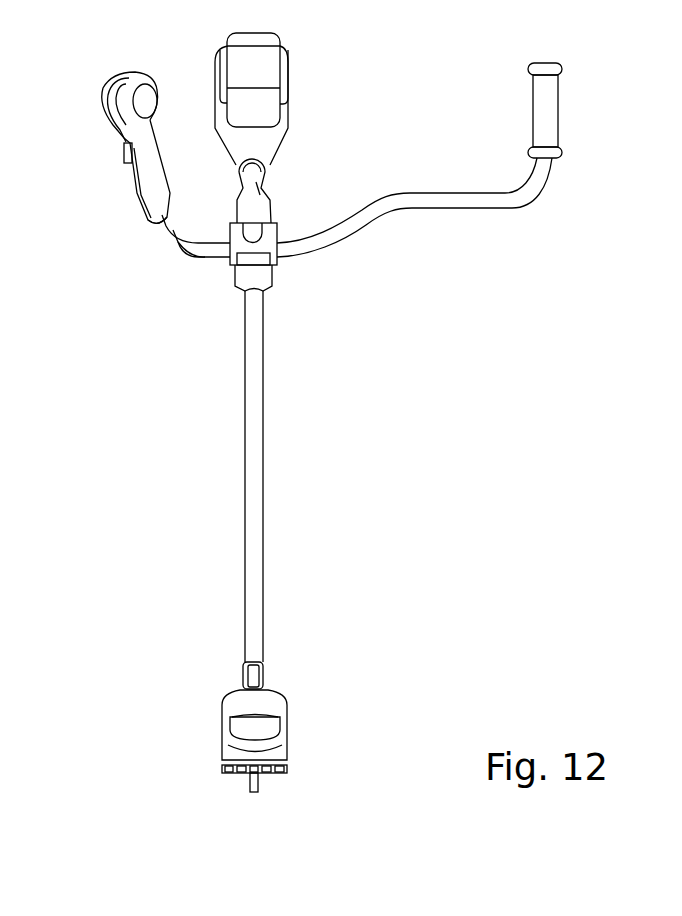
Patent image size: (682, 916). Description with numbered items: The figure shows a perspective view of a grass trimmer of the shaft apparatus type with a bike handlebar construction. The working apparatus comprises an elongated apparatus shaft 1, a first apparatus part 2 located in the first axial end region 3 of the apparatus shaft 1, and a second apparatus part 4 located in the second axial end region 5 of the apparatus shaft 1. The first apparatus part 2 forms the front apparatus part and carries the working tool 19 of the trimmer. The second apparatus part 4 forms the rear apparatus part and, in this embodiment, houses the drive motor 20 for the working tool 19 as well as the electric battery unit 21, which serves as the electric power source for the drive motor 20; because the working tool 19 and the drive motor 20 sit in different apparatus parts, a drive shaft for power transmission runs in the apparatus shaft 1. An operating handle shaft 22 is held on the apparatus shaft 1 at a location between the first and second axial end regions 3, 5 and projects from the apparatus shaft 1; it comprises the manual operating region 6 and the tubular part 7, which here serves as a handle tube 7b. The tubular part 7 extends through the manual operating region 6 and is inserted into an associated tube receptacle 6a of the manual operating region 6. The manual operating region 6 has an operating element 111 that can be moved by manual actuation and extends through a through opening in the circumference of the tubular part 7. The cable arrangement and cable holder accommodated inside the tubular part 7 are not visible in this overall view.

The apparatus shaft 1 is at (253, 423).
The first apparatus part 2 is at (285, 727).
The first axial end region 3 is at (265, 673).
The second apparatus part 4 is at (290, 108).
The second axial end region 5 is at (264, 170).
The manual operating region 6 is at (133, 173).
The tube receptacle 6a is at (170, 217).
The tubular part 7 is at (160, 223).
The handle tube 7b is at (165, 248).
The operating element 111 is at (127, 147).
The working tool 19 is at (287, 767).
The drive motor 20 is at (288, 83).
The electric battery unit 21 is at (279, 67).
The operating handle shaft 22 is at (200, 253).